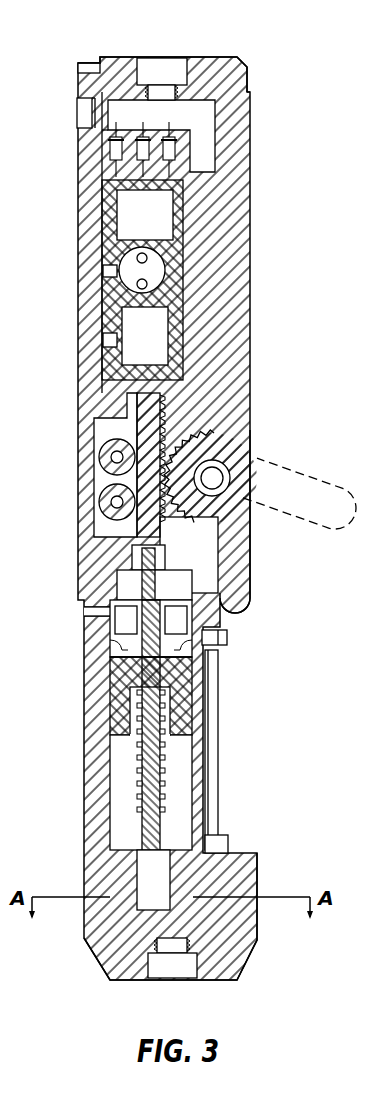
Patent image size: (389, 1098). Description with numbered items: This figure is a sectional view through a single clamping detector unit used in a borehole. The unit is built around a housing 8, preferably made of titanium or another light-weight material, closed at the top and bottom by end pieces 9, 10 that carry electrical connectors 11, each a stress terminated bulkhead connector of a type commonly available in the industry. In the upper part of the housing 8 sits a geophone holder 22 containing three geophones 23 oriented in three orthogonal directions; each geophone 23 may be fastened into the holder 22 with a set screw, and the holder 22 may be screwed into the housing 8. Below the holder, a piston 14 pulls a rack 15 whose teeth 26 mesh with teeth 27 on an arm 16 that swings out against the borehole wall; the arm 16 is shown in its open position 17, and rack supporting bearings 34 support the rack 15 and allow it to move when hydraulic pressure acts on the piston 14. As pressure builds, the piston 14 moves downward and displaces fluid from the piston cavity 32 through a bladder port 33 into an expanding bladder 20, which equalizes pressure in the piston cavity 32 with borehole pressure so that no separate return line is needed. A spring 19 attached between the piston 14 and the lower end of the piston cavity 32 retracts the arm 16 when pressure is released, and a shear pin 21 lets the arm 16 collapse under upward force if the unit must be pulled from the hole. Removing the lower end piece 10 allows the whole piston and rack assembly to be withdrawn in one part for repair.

The housing 8 is at (250, 255).
The end piece 9 is at (247, 78).
The end piece 10 is at (245, 968).
The electrical connector 11 is at (162, 53).
The piston 14 is at (197, 693).
The rack 15 is at (163, 408).
The arm 16 is at (252, 547).
The open position 17 is at (318, 482).
The spring 19 is at (140, 795).
The expanding bladder 20 is at (212, 793).
The shear pin 21 is at (163, 557).
The geophone holder 22 is at (103, 293).
The geophones 23 is at (103, 266).
The teeth 26 is at (166, 422).
The teeth 27 is at (215, 430).
The piston cavity 32 is at (186, 768).
The bladder port 33 is at (203, 815).
The rack supporting bearings 34 is at (100, 497).